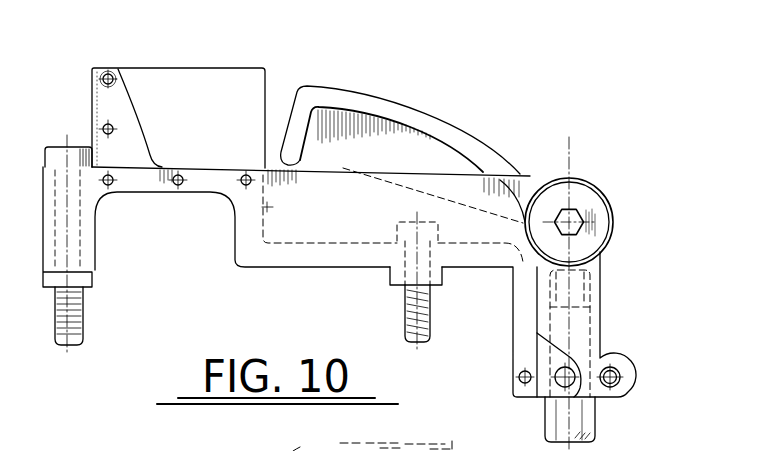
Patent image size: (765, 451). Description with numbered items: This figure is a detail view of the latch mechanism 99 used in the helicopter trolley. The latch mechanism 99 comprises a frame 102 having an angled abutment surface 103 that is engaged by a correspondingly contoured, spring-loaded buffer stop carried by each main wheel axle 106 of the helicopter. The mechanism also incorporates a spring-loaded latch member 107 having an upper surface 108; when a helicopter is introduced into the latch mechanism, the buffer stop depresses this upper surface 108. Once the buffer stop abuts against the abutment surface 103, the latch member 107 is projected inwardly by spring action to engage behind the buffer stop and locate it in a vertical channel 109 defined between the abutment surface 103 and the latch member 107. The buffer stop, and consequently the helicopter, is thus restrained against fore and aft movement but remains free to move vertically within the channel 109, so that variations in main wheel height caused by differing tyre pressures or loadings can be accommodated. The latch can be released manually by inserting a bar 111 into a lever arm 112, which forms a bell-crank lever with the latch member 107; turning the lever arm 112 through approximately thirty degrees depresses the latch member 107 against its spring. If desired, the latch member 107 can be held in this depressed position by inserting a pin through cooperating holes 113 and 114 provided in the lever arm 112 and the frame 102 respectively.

The latch mechanism 99 is at (562, 173).
The frame 102 is at (208, 180).
The angled abutment surface 103 is at (138, 102).
The main wheel axle 106 is at (337, 442).
The latch member 107 is at (457, 145).
The upper surface 108 is at (403, 107).
The vertical channel 109 is at (230, 115).
The bar 111 is at (578, 412).
The lever arm 112 is at (543, 357).
The hole 113 is at (560, 382).
The hole 114 is at (612, 370).